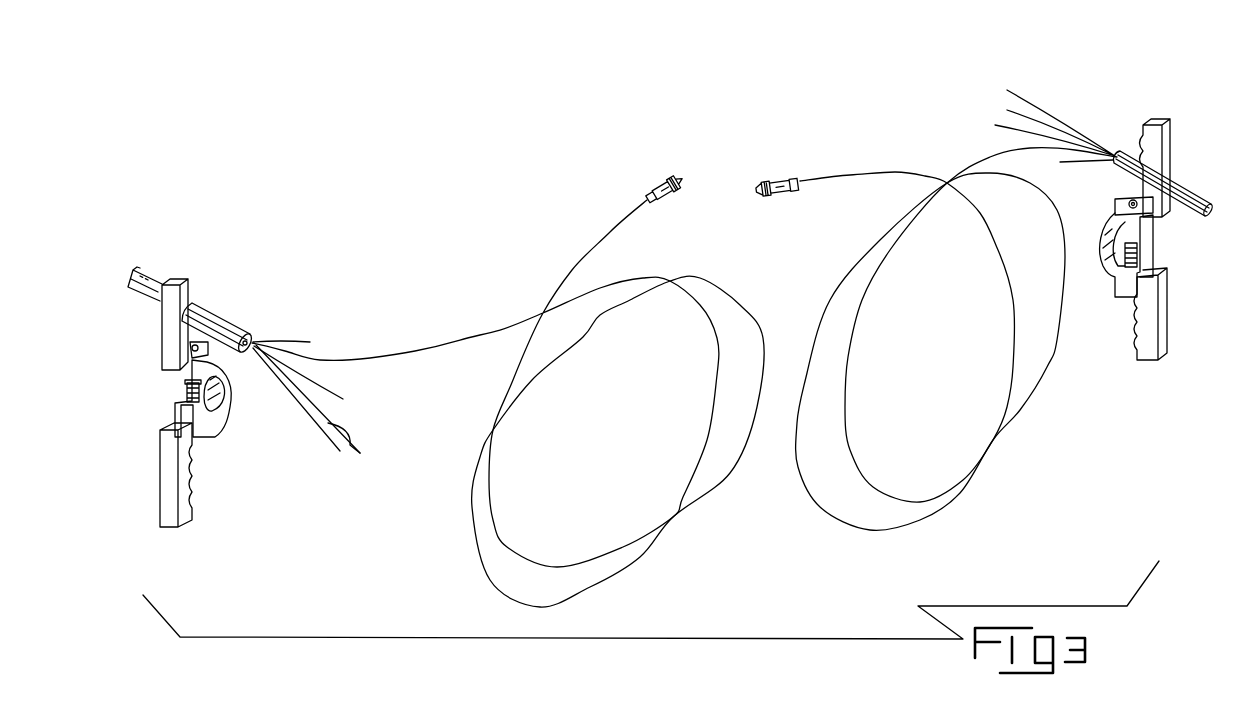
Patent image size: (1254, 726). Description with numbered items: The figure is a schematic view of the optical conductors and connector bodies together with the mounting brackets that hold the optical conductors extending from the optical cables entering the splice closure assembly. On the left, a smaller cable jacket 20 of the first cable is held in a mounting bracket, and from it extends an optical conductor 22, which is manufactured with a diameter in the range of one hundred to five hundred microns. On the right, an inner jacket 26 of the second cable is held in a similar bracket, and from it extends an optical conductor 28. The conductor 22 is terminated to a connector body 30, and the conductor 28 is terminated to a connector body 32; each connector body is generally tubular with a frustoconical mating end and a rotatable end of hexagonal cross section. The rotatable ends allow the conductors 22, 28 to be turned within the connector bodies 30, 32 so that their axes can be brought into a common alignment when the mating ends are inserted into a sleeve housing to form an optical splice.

The smaller cable jacket 20 is at (223, 326).
The optical conductor 22 is at (416, 350).
The inner jacket 26 is at (1117, 153).
The optical conductor 28 is at (895, 172).
The connector body 30 is at (655, 180).
The connector body 32 is at (787, 174).